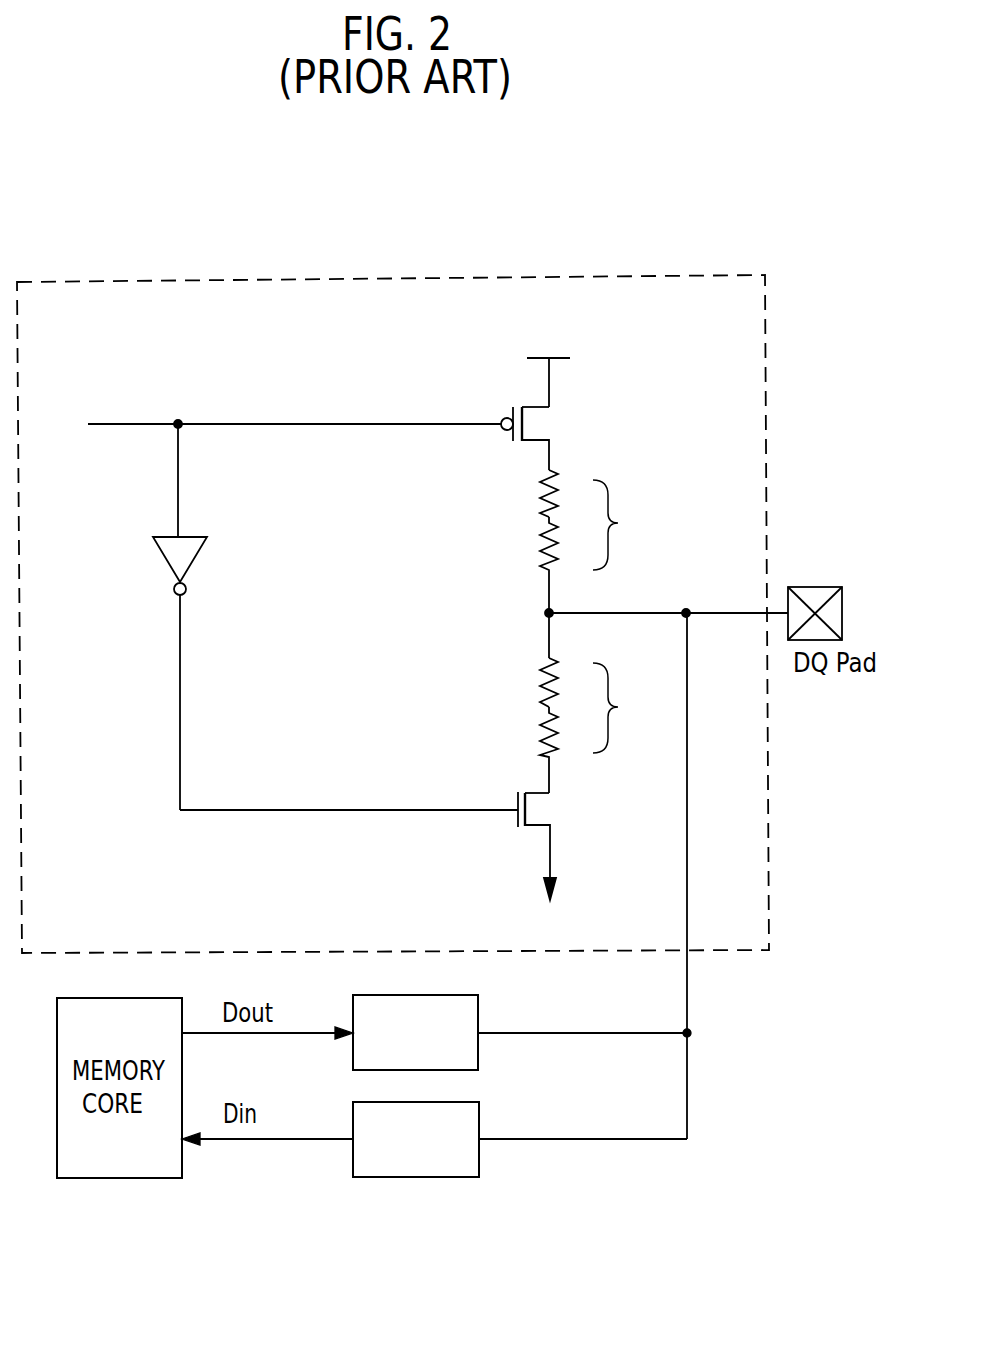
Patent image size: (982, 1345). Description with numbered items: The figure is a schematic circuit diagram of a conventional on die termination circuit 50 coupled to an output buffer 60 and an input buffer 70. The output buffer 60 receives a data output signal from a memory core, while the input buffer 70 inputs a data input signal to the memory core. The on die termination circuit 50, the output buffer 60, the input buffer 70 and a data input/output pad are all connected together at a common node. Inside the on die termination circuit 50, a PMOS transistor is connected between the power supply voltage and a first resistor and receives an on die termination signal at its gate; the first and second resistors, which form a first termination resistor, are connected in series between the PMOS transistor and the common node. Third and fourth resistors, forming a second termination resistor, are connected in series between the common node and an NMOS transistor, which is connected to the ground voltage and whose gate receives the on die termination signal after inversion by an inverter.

The on die termination circuit 50 is at (700, 273).
The output buffer 60 is at (418, 995).
The input buffer 70 is at (418, 1102).